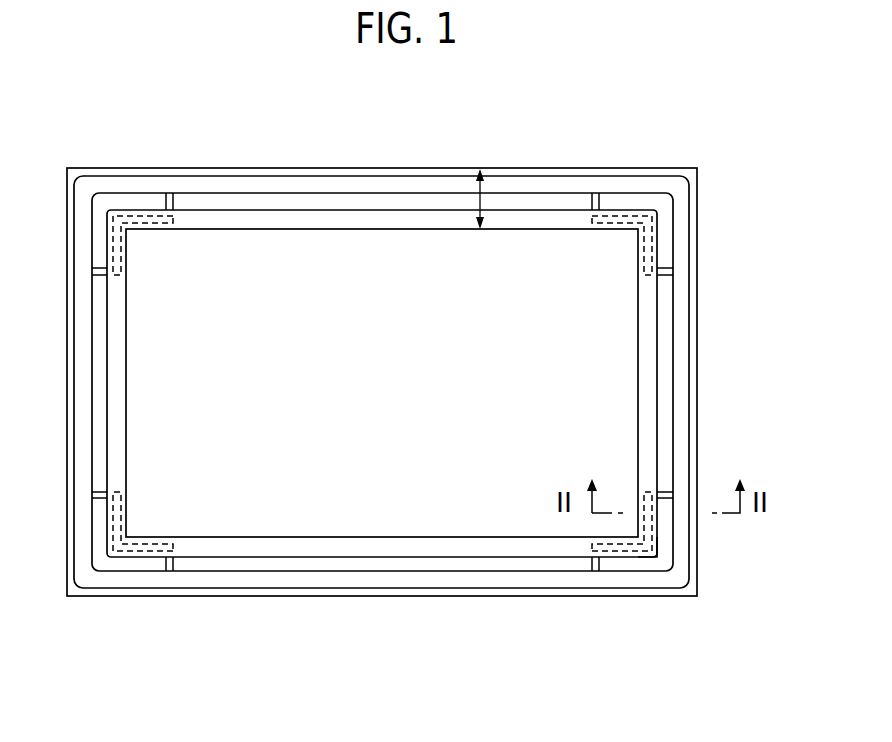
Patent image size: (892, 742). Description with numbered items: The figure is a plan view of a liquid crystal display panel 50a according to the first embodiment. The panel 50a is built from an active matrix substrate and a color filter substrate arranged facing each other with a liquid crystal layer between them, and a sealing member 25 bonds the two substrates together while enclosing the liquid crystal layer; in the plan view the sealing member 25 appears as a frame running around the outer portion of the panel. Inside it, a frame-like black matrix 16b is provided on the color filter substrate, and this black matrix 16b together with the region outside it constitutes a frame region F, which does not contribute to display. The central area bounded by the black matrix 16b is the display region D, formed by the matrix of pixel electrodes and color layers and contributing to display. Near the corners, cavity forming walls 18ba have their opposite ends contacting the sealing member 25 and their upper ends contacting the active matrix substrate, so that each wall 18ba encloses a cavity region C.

The liquid crystal display panel 50a is at (105, 139).
The sealing member 25 is at (682, 386).
The black matrix 16b is at (648, 328).
The display region D is at (382, 383).
The cavity forming wall 18ba is at (664, 493).
The cavity region C is at (664, 539).
The frame region F is at (482, 203).